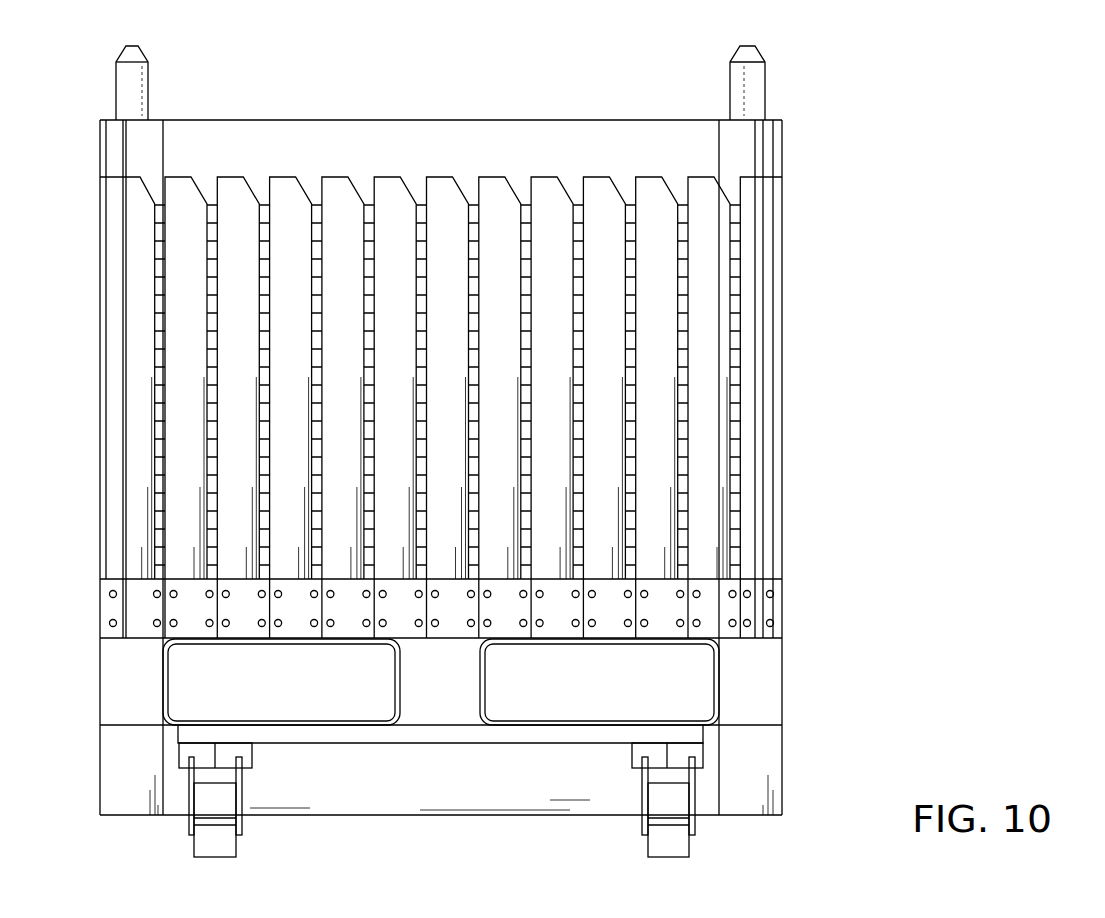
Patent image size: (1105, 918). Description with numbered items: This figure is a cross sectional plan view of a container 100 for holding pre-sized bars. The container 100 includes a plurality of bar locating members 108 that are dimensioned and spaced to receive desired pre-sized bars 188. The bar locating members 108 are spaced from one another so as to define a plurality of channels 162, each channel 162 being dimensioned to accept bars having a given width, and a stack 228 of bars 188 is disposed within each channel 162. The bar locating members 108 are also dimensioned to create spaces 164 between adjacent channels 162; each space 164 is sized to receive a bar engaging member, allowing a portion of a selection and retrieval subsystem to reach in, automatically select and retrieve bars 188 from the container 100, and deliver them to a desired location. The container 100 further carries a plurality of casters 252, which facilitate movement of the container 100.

The container 100 is at (508, 474).
The bar locating member 108 is at (237, 190).
The channel 162 is at (414, 172).
The space 164 is at (706, 346).
The bar 188 is at (317, 203).
The stack 228 is at (624, 178).
The caster 252 is at (677, 859).